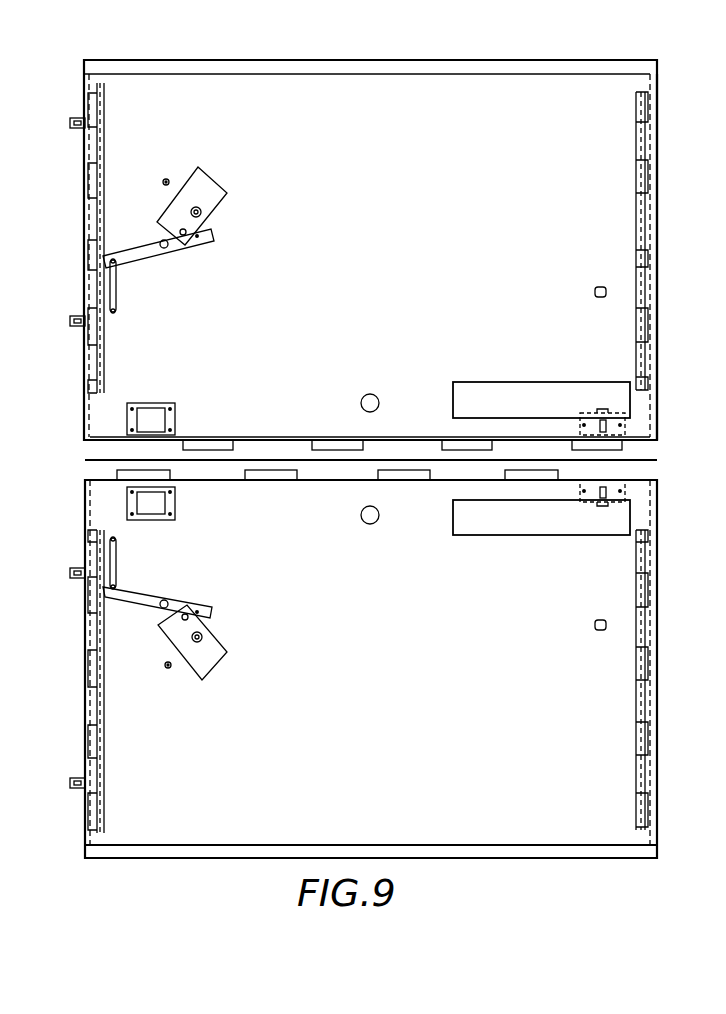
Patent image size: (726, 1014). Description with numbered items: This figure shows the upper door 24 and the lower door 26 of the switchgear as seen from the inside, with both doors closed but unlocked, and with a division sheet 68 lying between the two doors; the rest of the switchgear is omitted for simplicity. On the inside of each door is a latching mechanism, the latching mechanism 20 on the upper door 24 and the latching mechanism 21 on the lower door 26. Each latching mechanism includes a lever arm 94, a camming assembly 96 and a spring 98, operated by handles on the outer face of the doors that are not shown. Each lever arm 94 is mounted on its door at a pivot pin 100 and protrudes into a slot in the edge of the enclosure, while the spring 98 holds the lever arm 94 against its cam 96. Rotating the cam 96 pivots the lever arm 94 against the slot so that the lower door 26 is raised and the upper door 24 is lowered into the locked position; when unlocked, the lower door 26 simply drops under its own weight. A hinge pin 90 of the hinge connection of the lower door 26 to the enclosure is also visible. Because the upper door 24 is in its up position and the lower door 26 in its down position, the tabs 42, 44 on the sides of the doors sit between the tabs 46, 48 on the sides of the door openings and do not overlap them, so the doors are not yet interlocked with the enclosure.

The latching mechanism 20 is at (248, 181).
The latching mechanism 21 is at (232, 620).
The upper door 24 is at (658, 142).
The lower door 26 is at (137, 862).
The tab 42 is at (649, 130).
The tab 44 is at (92, 140).
The tab 46 is at (637, 177).
The tab 48 is at (104, 113).
The division sheet 68 is at (86, 459).
The hinge pin 90 is at (118, 290).
The lever arm 94 is at (202, 243).
The camming assembly 96 is at (210, 178).
The spring 98 is at (117, 572).
The pivot pin 100 is at (160, 243).